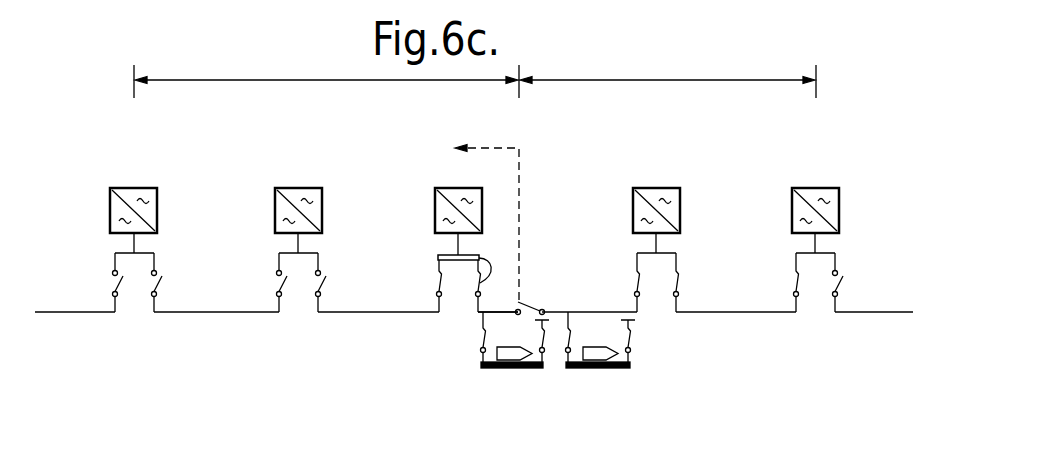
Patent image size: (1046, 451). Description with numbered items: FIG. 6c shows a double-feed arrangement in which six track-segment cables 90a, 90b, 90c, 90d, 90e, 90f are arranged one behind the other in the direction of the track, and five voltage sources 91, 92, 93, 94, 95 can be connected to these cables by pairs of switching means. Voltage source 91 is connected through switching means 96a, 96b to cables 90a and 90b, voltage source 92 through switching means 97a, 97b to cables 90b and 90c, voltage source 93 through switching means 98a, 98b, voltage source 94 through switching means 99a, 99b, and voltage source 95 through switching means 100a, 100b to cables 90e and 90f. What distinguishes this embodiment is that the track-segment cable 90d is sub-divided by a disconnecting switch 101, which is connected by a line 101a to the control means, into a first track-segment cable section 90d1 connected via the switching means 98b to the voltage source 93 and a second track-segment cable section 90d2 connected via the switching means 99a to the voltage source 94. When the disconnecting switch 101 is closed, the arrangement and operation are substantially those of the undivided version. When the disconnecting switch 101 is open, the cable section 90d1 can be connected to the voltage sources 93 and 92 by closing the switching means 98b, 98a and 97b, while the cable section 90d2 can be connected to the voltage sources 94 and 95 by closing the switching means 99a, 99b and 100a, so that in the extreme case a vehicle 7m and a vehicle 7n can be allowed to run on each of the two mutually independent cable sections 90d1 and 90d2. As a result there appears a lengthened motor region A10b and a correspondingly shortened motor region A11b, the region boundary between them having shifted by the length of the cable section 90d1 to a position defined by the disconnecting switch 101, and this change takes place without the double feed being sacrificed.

The voltage source 91 is at (128, 188).
The voltage source 92 is at (297, 189).
The voltage source 93 is at (443, 189).
The voltage source 94 is at (660, 187).
The voltage source 95 is at (820, 187).
The switching means 96a is at (111, 279).
The switching means 96b is at (158, 275).
The switching means 97a is at (275, 283).
The switching means 97b is at (322, 282).
The switching means 98a is at (437, 283).
The switching means 98b is at (437, 256).
The switching means 99a is at (636, 277).
The switching means 99b is at (680, 282).
The switching means 100a is at (795, 285).
The switching means 100b is at (840, 277).
The track-segment cable 90a is at (70, 312).
The track-segment cable 90b is at (202, 312).
The track-segment cable 90c is at (373, 313).
The track-segment cable 90d is at (471, 322).
The first track-segment cable section 90d1 is at (493, 313).
The second track-segment cable section 90d2 is at (598, 312).
The track-segment cable 90e is at (735, 313).
The track-segment cable 90f is at (878, 313).
The disconnecting switch 101 is at (521, 304).
The line 101a is at (522, 178).
The vehicle 7m is at (525, 368).
The vehicle 7n is at (602, 368).
The motor region A10b is at (326, 75).
The motor region A11b is at (668, 75).